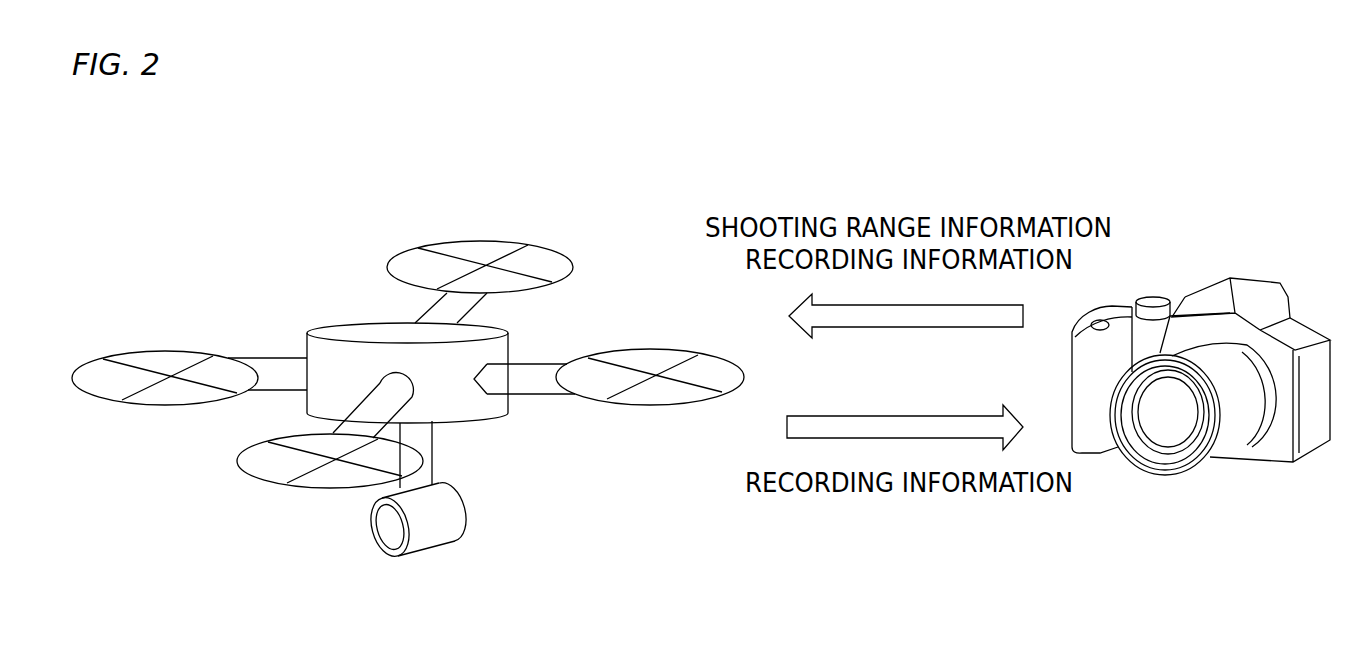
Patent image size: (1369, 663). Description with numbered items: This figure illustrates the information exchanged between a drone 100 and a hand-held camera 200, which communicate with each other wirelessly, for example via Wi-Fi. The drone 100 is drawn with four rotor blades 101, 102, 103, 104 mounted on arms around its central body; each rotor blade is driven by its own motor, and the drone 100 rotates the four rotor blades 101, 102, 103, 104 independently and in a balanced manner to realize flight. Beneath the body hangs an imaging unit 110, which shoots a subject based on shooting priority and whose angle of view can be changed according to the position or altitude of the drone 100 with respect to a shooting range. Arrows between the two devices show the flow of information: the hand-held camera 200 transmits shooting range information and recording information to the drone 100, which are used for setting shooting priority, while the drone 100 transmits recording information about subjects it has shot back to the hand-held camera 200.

The drone 100 is at (342, 363).
The rotor blade 101 is at (485, 257).
The rotor blade 102 is at (168, 362).
The rotor blade 103 is at (658, 360).
The rotor blade 104 is at (277, 462).
The imaging unit 110 is at (433, 528).
The hand-held camera 200 is at (1240, 293).